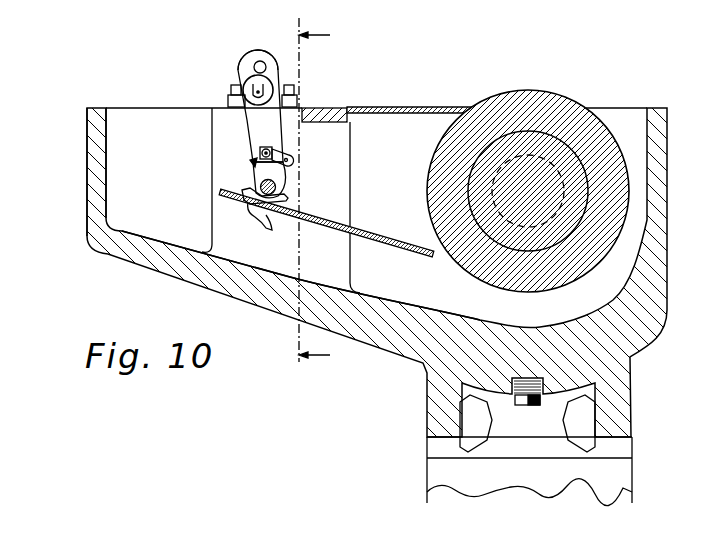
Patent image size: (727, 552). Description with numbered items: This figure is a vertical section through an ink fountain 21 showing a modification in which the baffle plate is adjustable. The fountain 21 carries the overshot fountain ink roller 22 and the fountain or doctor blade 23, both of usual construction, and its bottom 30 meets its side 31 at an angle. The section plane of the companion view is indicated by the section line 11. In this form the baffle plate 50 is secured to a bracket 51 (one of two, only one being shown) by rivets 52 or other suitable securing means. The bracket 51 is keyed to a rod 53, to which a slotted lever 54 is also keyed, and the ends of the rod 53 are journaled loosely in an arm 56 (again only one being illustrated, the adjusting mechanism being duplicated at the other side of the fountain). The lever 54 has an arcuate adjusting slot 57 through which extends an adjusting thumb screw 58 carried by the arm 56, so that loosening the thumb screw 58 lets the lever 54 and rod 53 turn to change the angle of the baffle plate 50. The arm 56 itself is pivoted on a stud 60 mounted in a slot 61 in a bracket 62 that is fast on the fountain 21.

The section line 11 is at (314, 198).
The ink fountain 21 is at (659, 321).
The fountain ink roller 22 is at (559, 90).
The doctor blade 23 is at (418, 107).
The bottom 30 is at (362, 306).
The side 31 is at (96, 188).
The baffle plate 50 is at (368, 244).
The bracket 51 is at (287, 199).
The rivet 52 is at (271, 226).
The rod 53 is at (277, 183).
The slotted lever 54 is at (262, 174).
The arm 56 is at (252, 123).
The arcuate adjusting slot 57 is at (287, 157).
The adjusting thumb screw 58 is at (258, 164).
The stud 60 is at (246, 76).
The slot 61 is at (266, 67).
The bracket 62 is at (257, 29).